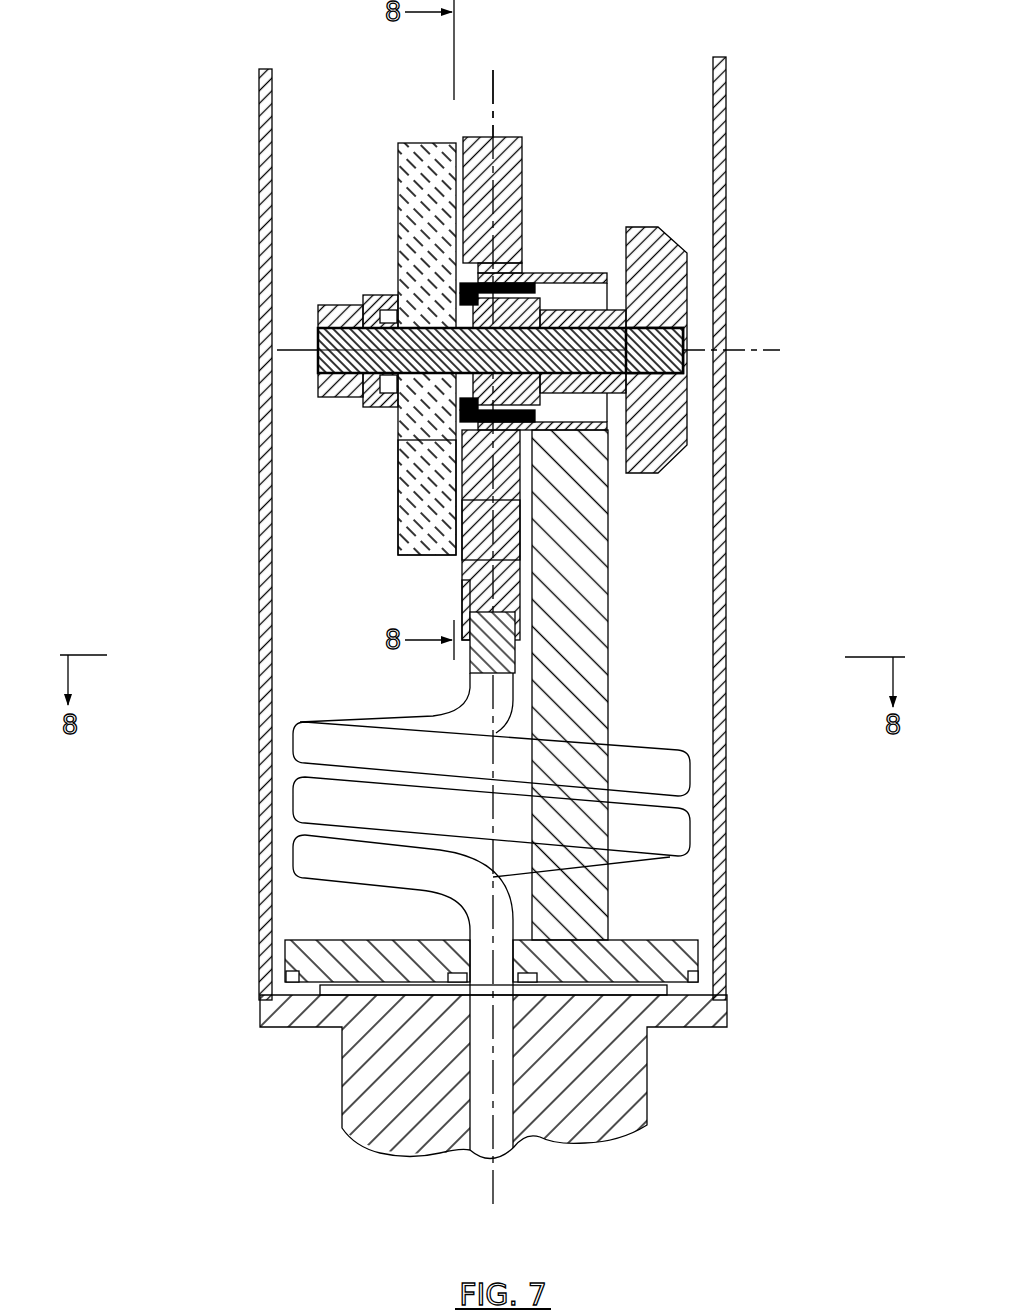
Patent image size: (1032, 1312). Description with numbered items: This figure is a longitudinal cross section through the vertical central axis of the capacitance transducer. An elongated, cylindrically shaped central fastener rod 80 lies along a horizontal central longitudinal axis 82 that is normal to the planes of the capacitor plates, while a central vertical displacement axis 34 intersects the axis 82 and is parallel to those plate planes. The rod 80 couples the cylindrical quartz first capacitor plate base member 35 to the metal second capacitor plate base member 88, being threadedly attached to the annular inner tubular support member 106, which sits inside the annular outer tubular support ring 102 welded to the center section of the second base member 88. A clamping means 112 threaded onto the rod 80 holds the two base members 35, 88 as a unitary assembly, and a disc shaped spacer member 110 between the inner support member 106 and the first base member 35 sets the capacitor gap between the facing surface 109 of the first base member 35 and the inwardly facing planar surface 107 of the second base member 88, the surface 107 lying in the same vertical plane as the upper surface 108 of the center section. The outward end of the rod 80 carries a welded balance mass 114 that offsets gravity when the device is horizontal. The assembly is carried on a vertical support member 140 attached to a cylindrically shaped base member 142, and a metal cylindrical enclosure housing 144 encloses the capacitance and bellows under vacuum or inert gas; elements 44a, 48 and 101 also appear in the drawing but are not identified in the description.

The displacement axis 34 is at (495, 72).
The first capacitor plate base member 35 is at (397, 458).
The spring seat 44a is at (462, 594).
The coil spring 48 is at (293, 803).
The central fastener rod 80 is at (318, 345).
The central longitudinal axis 82 is at (752, 350).
The second capacitor plate base member 88 is at (460, 573).
The spring retainer 101 is at (470, 663).
The outer tubular support ring 102 is at (537, 270).
The inner tubular support member 106 is at (557, 310).
The inwardly facing planar surface 107 is at (460, 484).
The upper surface 108 is at (457, 402).
The facing surface 109 is at (460, 527).
The spacer member 110 is at (398, 270).
The clamping means 112 is at (350, 287).
The balance mass 114 is at (687, 430).
The vertical support member 140 is at (608, 628).
The base member 142 is at (667, 1010).
The enclosure housing 144 is at (727, 877).